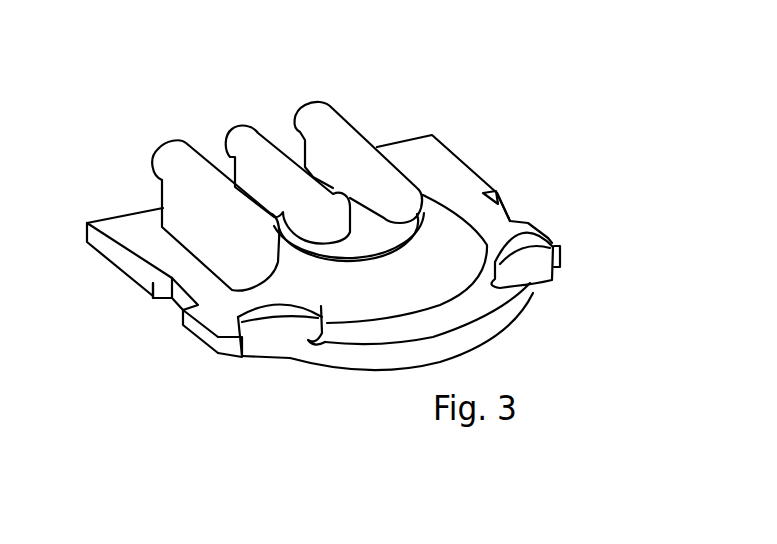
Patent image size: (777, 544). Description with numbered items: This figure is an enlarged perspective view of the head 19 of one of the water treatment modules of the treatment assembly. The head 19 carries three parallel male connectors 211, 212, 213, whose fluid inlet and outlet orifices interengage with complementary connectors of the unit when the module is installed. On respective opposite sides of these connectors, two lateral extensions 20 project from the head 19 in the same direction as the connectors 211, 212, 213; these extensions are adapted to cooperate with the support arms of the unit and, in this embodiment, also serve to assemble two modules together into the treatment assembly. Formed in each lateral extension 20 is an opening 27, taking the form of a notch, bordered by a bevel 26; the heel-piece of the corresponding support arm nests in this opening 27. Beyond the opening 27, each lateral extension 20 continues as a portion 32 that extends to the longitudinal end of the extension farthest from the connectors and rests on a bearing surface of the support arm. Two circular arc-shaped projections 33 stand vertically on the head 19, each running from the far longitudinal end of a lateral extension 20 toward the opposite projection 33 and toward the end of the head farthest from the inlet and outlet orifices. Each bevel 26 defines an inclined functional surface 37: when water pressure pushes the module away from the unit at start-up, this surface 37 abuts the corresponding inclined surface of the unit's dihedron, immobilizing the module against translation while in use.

The head 19 is at (423, 110).
The lateral extension 20 is at (96, 265).
The male connector 211 is at (358, 119).
The male connector 212 is at (288, 141).
The male connector 213 is at (214, 172).
The bevel 26 is at (153, 297).
The opening 27 is at (169, 310).
The portion of the lateral extension 32 is at (200, 338).
The circular arc-shaped projection 33 is at (283, 337).
The inclined functional surface 37 is at (160, 300).